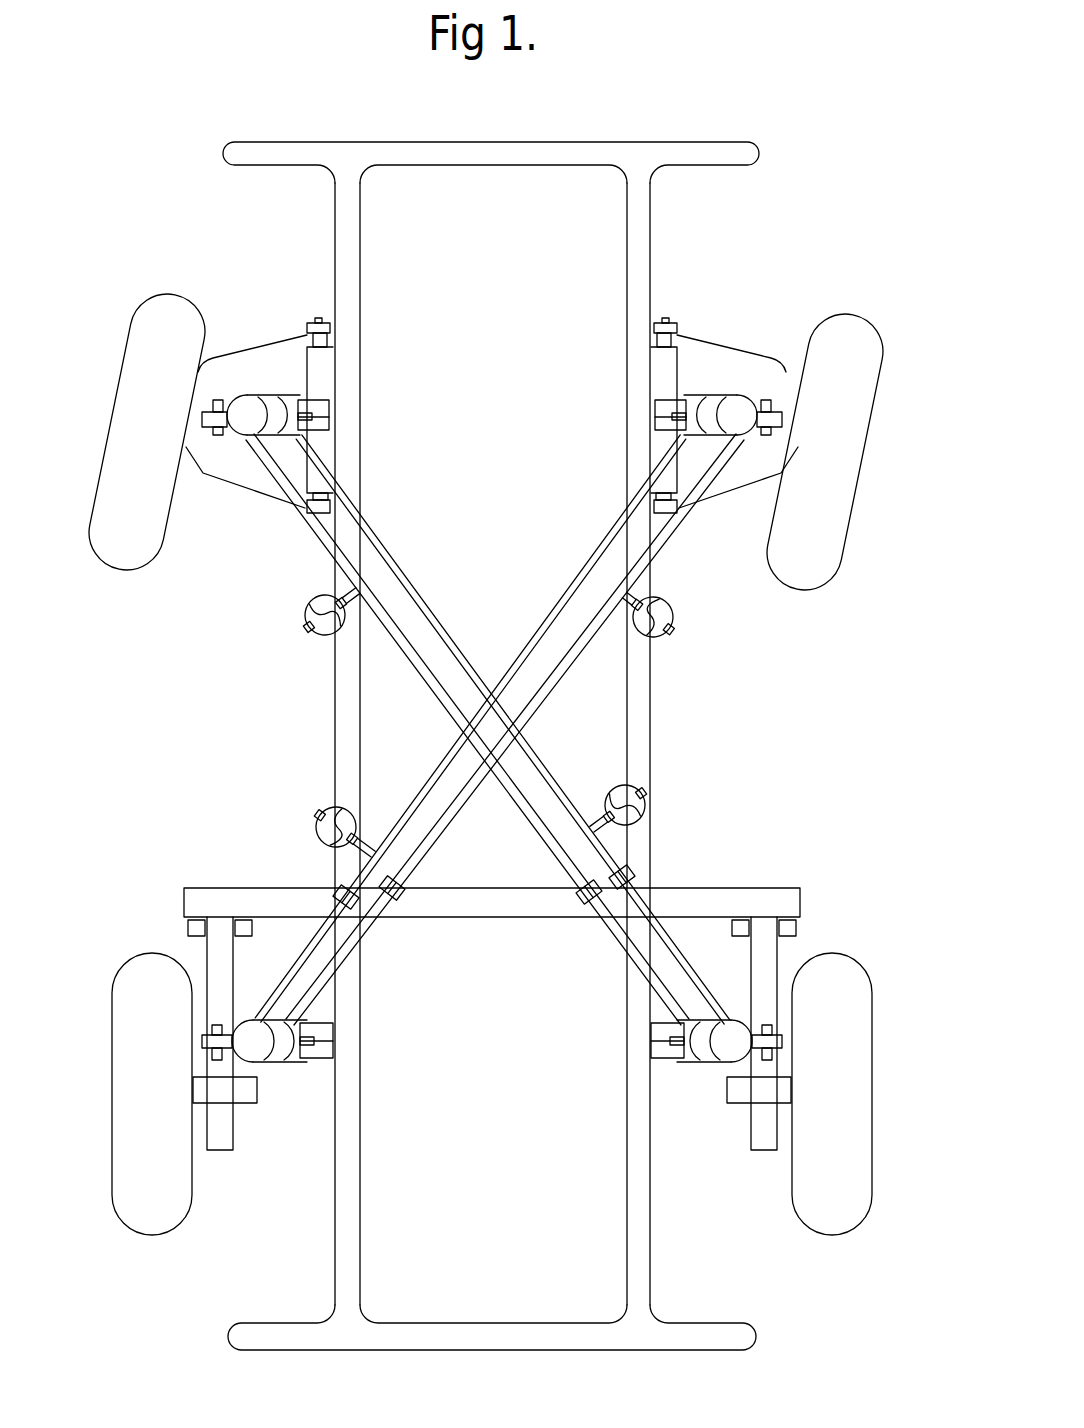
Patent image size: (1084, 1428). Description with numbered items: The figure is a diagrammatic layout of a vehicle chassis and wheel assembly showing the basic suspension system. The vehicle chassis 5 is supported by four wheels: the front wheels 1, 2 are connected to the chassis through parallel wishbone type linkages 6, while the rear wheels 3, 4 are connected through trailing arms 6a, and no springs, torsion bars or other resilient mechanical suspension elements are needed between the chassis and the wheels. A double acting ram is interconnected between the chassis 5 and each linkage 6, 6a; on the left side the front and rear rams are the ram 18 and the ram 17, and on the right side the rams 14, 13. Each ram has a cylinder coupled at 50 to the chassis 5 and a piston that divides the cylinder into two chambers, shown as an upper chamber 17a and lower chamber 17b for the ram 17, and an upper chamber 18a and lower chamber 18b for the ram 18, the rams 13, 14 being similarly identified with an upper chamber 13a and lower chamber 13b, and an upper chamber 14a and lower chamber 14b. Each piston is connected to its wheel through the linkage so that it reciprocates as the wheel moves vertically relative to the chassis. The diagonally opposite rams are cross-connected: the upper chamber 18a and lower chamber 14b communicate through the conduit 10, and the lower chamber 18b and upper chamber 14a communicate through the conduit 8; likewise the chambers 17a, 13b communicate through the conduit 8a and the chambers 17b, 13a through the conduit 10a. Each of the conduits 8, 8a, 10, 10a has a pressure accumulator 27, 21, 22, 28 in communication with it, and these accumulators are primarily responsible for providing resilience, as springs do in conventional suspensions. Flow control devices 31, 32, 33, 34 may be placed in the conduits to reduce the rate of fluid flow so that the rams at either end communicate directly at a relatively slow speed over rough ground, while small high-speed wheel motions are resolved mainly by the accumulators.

The front wheel 1 is at (138, 450).
The front wheel 2 is at (845, 500).
The rear wheel 3 is at (870, 1095).
The rear wheel 4 is at (112, 1090).
The vehicle chassis 5 is at (333, 692).
The parallel wishbone type linkage 6 is at (263, 338).
The trailing arm 6a is at (213, 975).
The conduit 8 is at (418, 682).
The conduit 8a is at (547, 688).
The conduit 10 is at (392, 562).
The conduit 10a is at (590, 557).
The ram 13 is at (685, 390).
The upper chamber 13a is at (693, 436).
The lower chamber 13b is at (732, 447).
The ram 14 is at (687, 1007).
The upper chamber 14a is at (697, 1064).
The lower chamber 14b is at (727, 1066).
The ram 17 is at (327, 1066).
The upper chamber 17a is at (290, 1066).
The lower chamber 17b is at (257, 1066).
The ram 18 is at (290, 393).
The upper chamber 18a is at (283, 440).
The lower chamber 18b is at (248, 445).
The pressure accumulator 21 is at (675, 615).
The pressure accumulator 22 is at (648, 803).
The pressure accumulator 27 is at (303, 613).
The pressure accumulator 28 is at (308, 828).
The flow control device 31 is at (336, 890).
The flow control device 32 is at (405, 902).
The flow control device 33 is at (637, 870).
The flow control device 34 is at (577, 905).
The cylinder coupling 50 is at (323, 410).